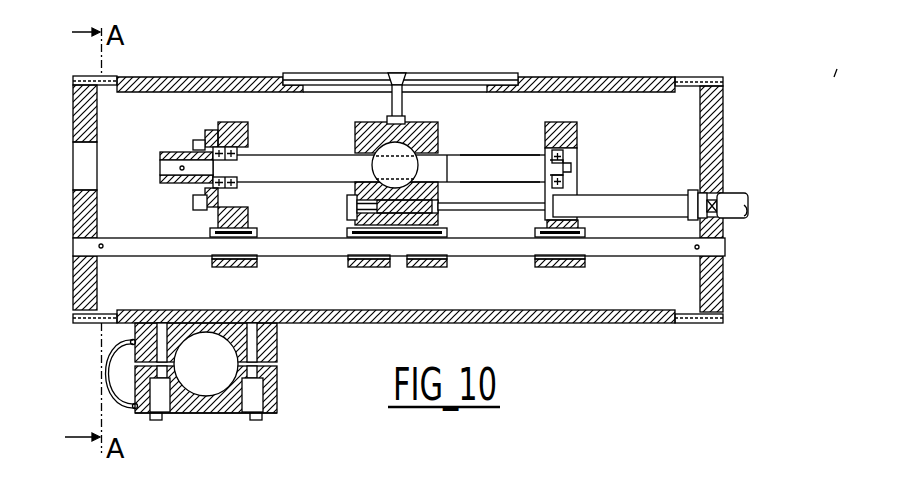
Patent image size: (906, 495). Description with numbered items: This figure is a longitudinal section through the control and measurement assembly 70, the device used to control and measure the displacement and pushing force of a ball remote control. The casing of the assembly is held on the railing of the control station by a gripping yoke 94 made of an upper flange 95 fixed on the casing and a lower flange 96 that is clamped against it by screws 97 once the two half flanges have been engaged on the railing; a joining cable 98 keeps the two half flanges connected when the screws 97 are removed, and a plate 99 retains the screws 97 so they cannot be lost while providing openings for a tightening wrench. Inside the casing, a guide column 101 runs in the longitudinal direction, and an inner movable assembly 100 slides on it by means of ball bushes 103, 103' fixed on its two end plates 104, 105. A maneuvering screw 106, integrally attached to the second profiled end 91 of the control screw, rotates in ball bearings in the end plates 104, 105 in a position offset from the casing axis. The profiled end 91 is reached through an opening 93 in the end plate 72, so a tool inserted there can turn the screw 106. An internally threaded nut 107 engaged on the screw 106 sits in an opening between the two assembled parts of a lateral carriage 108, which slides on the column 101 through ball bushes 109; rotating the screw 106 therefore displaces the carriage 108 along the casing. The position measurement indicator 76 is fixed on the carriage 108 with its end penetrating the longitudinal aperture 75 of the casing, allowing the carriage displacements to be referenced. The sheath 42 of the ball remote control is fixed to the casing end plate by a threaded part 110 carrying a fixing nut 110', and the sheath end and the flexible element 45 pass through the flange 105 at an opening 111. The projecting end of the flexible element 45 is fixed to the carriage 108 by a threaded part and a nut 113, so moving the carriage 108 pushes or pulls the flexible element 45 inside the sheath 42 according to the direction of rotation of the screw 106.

The sheath 42 is at (733, 207).
The flexible element 45 is at (472, 210).
The control and measurement assembly 70 is at (645, 323).
The end plate 72 is at (73, 270).
The longitudinal aperture 75 is at (318, 78).
The position measurement indicator 76 is at (395, 88).
The second profiled end of control screw 91 is at (172, 152).
The opening 93 is at (73, 170).
The gripping yoke 94 is at (186, 424).
The upper flange 95 is at (272, 350).
The lower flange 96 is at (212, 416).
The screws 97 is at (266, 376).
The joining cable 98 is at (104, 370).
The plate 99 is at (236, 418).
The inner movable assembly 100 is at (287, 152).
The guide column 101 is at (397, 255).
The ball bush 103 is at (242, 279).
The ball bush 103' is at (550, 279).
The end plate 104 is at (226, 124).
The end plate 105 is at (562, 130).
The maneuvering screw 106 is at (497, 163).
The nut 107 is at (399, 160).
The lateral carriage 108 is at (352, 213).
The ball bushes 109 is at (418, 268).
The threaded part 110 is at (621, 176).
The fixing nut 110' is at (687, 166).
The opening 111 is at (577, 196).
The nut 113 is at (448, 162).